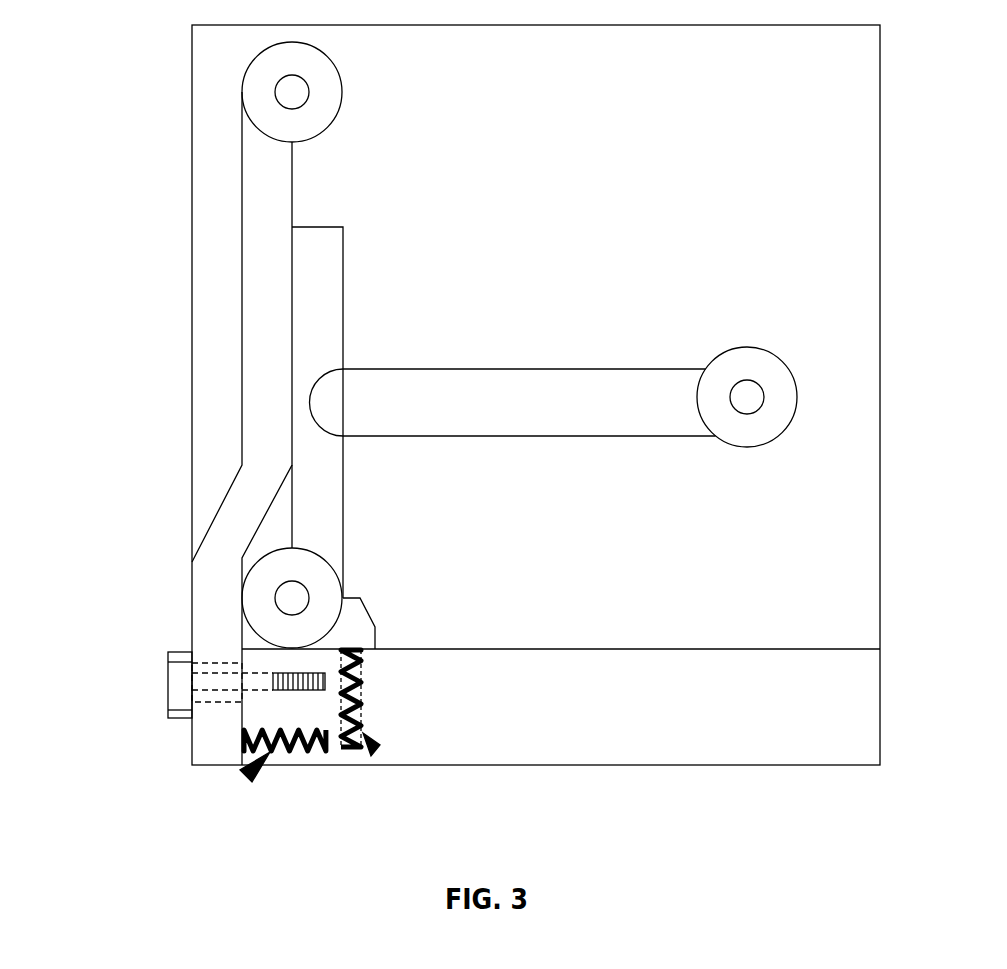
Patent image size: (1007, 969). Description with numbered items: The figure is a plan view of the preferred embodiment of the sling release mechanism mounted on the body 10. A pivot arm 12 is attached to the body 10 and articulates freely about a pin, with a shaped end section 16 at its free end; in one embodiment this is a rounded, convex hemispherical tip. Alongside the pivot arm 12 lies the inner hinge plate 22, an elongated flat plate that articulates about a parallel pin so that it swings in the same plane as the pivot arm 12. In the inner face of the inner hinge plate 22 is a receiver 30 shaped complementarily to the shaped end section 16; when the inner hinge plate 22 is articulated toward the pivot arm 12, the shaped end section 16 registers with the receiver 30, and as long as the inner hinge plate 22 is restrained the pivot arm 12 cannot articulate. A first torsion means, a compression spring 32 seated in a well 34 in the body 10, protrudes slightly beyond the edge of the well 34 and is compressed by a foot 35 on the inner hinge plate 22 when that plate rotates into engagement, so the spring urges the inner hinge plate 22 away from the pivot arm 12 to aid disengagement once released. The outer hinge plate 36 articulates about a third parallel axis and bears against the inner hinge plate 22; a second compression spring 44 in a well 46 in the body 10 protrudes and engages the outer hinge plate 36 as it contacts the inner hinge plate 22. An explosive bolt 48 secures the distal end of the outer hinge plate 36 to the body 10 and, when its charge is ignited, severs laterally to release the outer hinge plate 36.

The body 10 is at (628, 163).
The pivot arm 12 is at (647, 410).
The shaped end section 16 is at (327, 395).
The inner hinge plate 22 is at (302, 320).
The receiver 30 is at (272, 397).
The compression spring 32 is at (358, 705).
The well 34 is at (375, 750).
The foot 35 is at (357, 625).
The outer hinge plate 36 is at (262, 271).
The compression spring 44 is at (240, 740).
The well 46 is at (246, 776).
The explosive bolt 48 is at (182, 681).